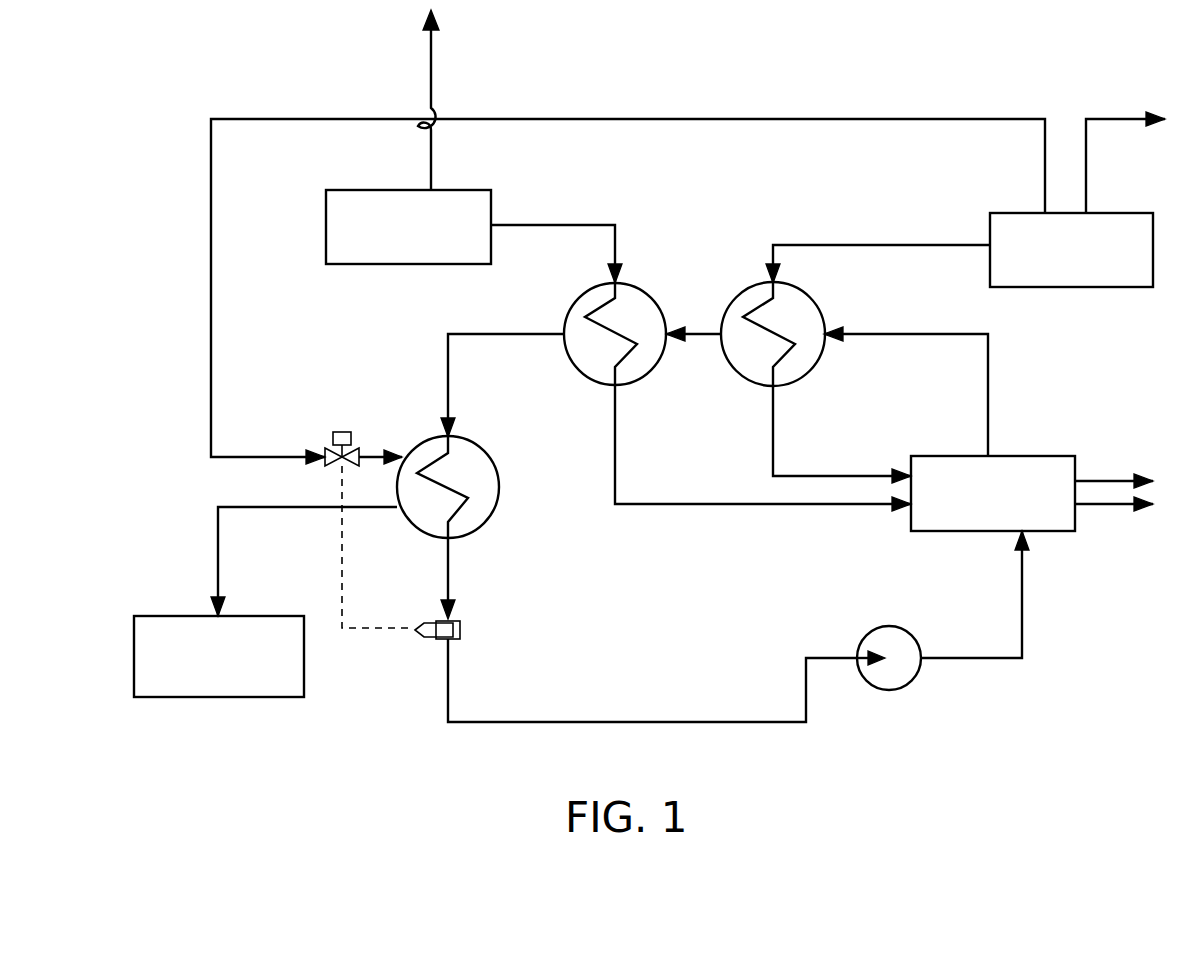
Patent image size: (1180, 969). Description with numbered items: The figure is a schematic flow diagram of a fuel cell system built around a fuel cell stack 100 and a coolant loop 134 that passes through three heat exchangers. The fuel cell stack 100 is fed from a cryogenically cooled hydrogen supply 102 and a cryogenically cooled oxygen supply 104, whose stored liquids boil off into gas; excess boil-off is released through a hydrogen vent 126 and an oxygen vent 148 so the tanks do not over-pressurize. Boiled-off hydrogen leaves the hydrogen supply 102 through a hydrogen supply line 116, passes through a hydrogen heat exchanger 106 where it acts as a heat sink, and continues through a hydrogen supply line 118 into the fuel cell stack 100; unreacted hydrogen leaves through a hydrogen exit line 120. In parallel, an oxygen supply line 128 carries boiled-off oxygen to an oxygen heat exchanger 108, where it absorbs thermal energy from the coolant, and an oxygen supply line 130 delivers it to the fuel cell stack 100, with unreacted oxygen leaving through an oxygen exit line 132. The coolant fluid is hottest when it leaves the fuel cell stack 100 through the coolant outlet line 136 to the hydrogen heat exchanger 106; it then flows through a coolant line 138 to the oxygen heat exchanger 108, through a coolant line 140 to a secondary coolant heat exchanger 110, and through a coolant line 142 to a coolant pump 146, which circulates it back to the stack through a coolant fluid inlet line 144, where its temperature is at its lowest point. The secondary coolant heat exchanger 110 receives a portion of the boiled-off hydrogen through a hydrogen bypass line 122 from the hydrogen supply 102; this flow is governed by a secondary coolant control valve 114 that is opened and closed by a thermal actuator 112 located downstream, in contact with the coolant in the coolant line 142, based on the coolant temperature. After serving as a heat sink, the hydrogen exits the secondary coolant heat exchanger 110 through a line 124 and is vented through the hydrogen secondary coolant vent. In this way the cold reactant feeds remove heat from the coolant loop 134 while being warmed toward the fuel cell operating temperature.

The fuel cell stack 100 is at (1043, 456).
The hydrogen supply 102 is at (1112, 288).
The oxygen supply 104 is at (407, 190).
The hydrogen heat exchanger 106 is at (752, 283).
The oxygen heat exchanger 108 is at (638, 283).
The secondary coolant heat exchanger 110 is at (498, 477).
The thermal actuator 112 is at (427, 643).
The secondary coolant control valve 114 is at (325, 463).
The hydrogen supply line 116 is at (887, 243).
The hydrogen supply line 118 is at (818, 476).
The hydrogen exit line 120 is at (1108, 478).
The hydrogen bypass line 122 is at (638, 118).
The line 124 is at (218, 570).
The hydrogen vent 126 is at (1098, 119).
The oxygen supply line 128 is at (548, 222).
The oxygen supply line 130 is at (735, 504).
The oxygen exit line 132 is at (1108, 507).
The coolant loop 134 is at (870, 774).
The coolant outlet line 136 is at (988, 359).
The coolant line 138 is at (697, 330).
The coolant line 140 is at (450, 333).
The coolant line 142 is at (465, 722).
The coolant fluid inlet line 144 is at (1022, 620).
The coolant pump 146 is at (912, 628).
The oxygen vent 148 is at (433, 68).